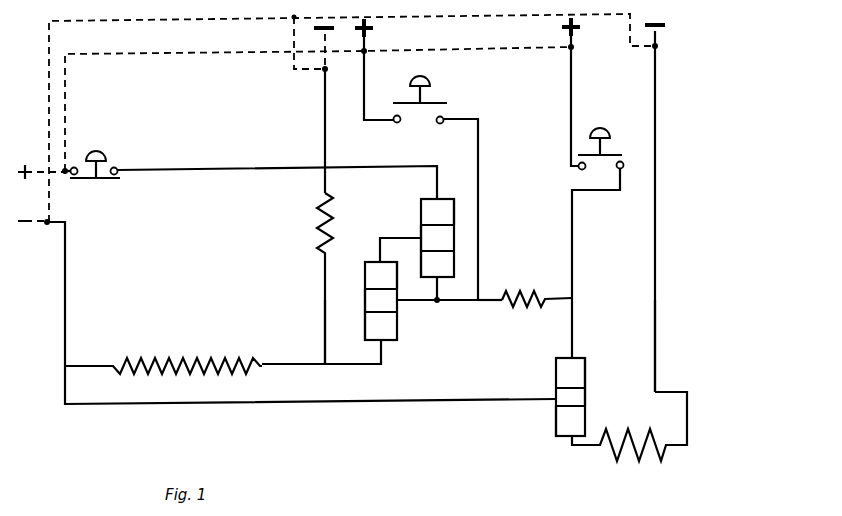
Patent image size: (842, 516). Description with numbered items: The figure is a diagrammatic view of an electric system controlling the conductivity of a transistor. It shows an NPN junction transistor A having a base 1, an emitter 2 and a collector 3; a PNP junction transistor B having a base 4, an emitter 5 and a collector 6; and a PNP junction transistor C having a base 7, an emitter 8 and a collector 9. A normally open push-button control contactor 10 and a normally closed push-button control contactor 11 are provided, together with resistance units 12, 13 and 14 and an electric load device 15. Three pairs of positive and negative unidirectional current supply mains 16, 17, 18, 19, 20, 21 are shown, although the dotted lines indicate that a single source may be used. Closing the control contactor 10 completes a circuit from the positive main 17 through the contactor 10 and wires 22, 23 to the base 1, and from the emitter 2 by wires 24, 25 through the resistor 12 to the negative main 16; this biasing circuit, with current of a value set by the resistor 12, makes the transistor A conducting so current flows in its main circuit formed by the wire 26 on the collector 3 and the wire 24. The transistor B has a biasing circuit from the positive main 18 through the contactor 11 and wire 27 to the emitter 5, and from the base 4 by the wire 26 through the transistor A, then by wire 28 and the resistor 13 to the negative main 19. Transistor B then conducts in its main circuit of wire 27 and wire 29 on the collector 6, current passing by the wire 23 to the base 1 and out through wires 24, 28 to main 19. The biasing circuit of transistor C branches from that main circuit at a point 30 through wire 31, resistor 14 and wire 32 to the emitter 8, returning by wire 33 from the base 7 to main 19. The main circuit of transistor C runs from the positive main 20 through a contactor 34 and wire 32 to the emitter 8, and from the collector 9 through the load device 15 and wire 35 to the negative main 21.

The base 1 is at (365, 303).
The emitter 2 is at (365, 325).
The collector 3 is at (365, 278).
The base 4 is at (454, 238).
The emitter 5 is at (454, 212).
The collector 6 is at (454, 263).
The base 7 is at (585, 393).
The emitter 8 is at (585, 370).
The collector 9 is at (585, 415).
The control contactor 10 is at (437, 110).
The control contactor 11 is at (103, 170).
The resistance unit 12 is at (321, 228).
The resistance unit 13 is at (195, 362).
The resistance unit 14 is at (535, 293).
The electric load device 15 is at (655, 418).
The negative supply main 16 is at (325, 86).
The positive supply main 17 is at (364, 85).
The positive supply main 18 is at (54, 176).
The negative supply main 19 is at (47, 226).
The positive supply main 20 is at (571, 62).
The negative supply main 21 is at (653, 59).
The wire 22 is at (478, 150).
The wire 23 is at (420, 305).
The wire 24 is at (350, 364).
The wire 25 is at (320, 302).
The wire 26 is at (394, 238).
The wire 27 is at (296, 172).
The wire 28 is at (288, 364).
The wire 29 is at (440, 292).
The point 30 is at (437, 305).
The wire 31 is at (497, 303).
The wire 32 is at (575, 322).
The wire 33 is at (468, 400).
The contactor 34 is at (581, 174).
The wire 35 is at (655, 343).
The junction transistor A is at (365, 262).
The junction transistor B is at (421, 199).
The junction transistor C is at (556, 358).